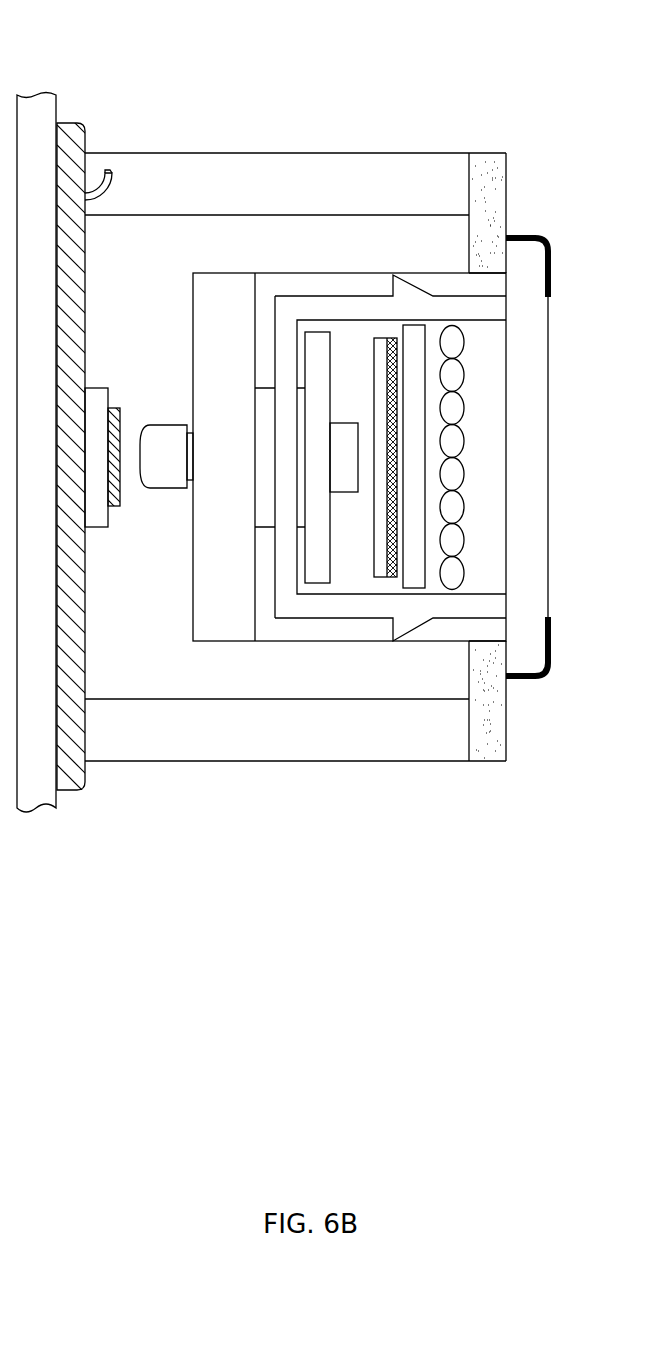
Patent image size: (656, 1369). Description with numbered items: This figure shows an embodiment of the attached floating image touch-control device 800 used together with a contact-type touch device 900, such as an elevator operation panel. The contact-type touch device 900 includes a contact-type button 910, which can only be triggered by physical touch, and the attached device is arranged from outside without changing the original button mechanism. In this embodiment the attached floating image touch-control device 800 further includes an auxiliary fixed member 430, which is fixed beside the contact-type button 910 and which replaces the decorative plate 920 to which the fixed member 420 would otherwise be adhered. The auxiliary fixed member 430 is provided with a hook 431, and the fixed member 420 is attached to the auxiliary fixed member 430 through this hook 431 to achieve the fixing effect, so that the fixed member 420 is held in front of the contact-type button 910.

The fixed member 420 is at (300, 170).
The auxiliary fixed member 430 is at (71, 124).
The hook 431 is at (108, 173).
The attached floating image touch-control device 800 is at (390, 828).
The contact-type touch device 900 is at (52, 829).
The contact-type button 910 is at (114, 506).
The decorative plate 920 is at (70, 778).